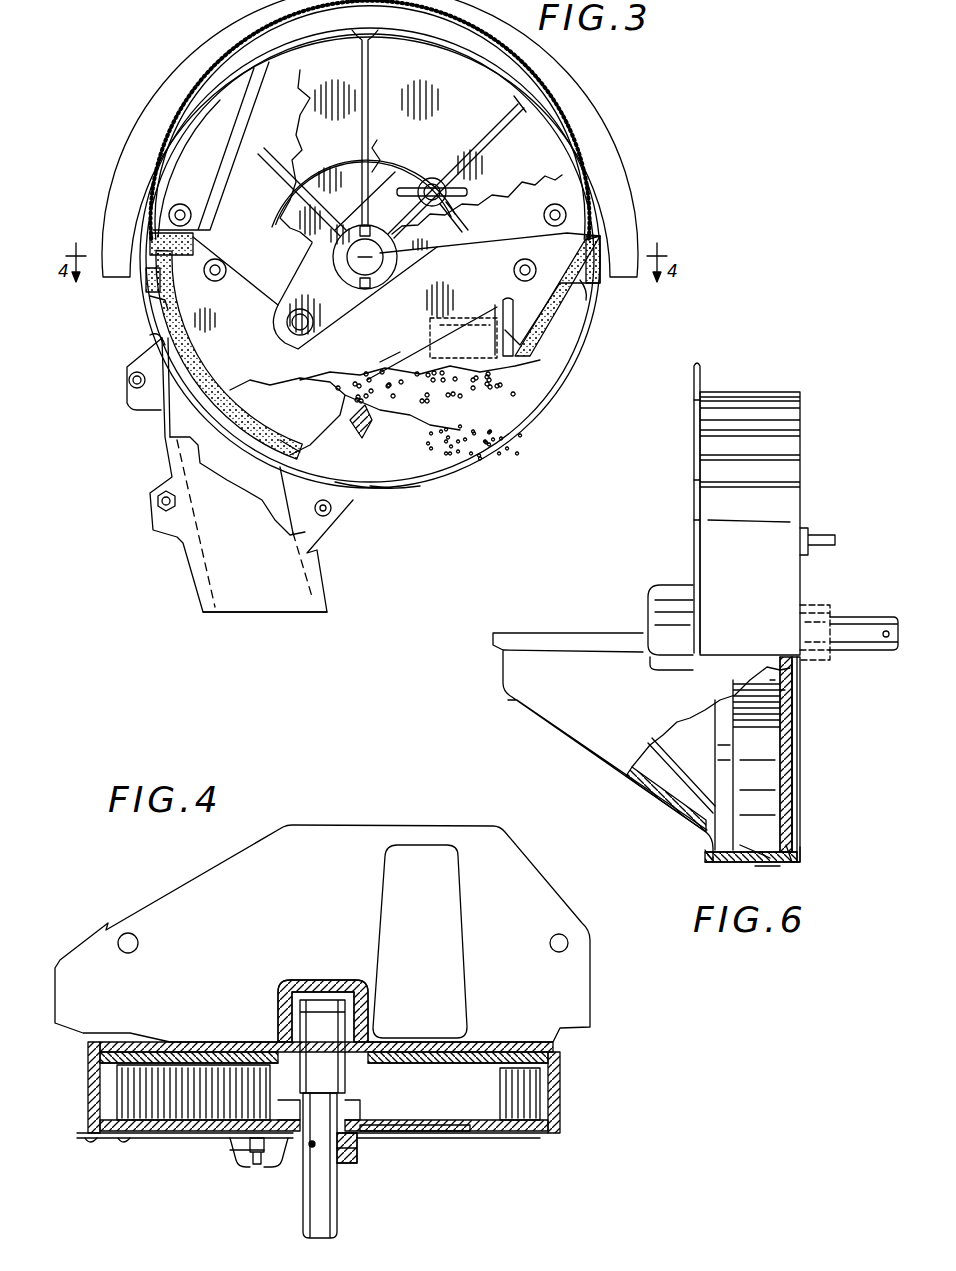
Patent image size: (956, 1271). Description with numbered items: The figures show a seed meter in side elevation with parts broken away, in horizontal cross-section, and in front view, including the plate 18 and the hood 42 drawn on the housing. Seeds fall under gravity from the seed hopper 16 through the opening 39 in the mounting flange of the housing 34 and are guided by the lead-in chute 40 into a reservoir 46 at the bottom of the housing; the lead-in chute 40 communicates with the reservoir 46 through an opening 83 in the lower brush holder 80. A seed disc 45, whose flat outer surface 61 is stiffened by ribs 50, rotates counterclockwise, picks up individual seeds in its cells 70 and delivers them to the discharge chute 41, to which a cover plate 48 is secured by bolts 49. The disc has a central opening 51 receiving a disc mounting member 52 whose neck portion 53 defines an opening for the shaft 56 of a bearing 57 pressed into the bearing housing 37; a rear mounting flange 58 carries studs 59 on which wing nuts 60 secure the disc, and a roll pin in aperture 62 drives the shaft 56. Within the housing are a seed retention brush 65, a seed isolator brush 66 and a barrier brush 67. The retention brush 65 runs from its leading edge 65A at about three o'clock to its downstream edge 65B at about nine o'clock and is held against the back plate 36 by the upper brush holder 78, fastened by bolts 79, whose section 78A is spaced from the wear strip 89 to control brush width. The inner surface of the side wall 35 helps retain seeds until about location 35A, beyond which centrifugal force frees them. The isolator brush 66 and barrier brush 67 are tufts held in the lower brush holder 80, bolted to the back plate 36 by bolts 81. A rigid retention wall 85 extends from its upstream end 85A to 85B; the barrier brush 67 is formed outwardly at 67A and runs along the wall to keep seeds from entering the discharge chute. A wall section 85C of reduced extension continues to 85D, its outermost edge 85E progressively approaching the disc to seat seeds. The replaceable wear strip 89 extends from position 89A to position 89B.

In FIG. 3, the seed hopper 16 is at (366, 84).
In FIG. 4, the top plate 18 is at (320, 866).
In FIG. 3, the housing 34 is at (556, 400).
In FIG. 3, the side wall 35 is at (420, 488).
In FIG. 6, the side wall 35 is at (750, 567).
In FIG. 4, the side wall 35 is at (562, 1074).
In FIG. 3, the end location of side wall interior surface 35A is at (150, 372).
In FIG. 3, the back plate 36 is at (282, 280).
In FIG. 6, the back plate 36 is at (802, 448).
In FIG. 4, the back plate 36 is at (140, 1042).
In FIG. 6, the bearing housing 37 is at (680, 582).
In FIG. 4, the bearing housing 37 is at (340, 982).
In FIG. 4, the opening 39 is at (430, 936).
In FIG. 3, the lead-in chute 40 is at (468, 356).
In FIG. 6, the lead-in chute 40 is at (609, 694).
In FIG. 3, the discharge chute 41 is at (160, 430).
In FIG. 3, the hood 42 is at (584, 94).
In FIG. 6, the hood 42 is at (705, 374).
In FIG. 3, the seed disc 45 is at (484, 112).
In FIG. 6, the seed disc 45 is at (798, 728).
In FIG. 4, the seed disc 45 is at (470, 1133).
In FIG. 3, the reservoir 46 is at (478, 410).
In FIG. 6, the reservoir 46 is at (758, 779).
In FIG. 3, the cover plate 48 is at (250, 600).
In FIG. 3, the bolts 49 is at (156, 498).
In FIG. 3, the ribs 50 is at (376, 152).
In FIG. 6, the ribs 50 is at (795, 686).
In FIG. 4, the ribs 50 is at (416, 1138).
In FIG. 4, the opening 51 is at (360, 1134).
In FIG. 4, the disc mounting member 52 is at (300, 1172).
In FIG. 4, the neck portion 53 is at (352, 1165).
In FIG. 6, the shaft 56 is at (858, 614).
In FIG. 4, the shaft 56 is at (303, 1205).
In FIG. 4, the bearing 57 is at (300, 1030).
In FIG. 4, the rear mounting flange 58 is at (374, 1096).
In FIG. 4, the studs 59 is at (250, 1160).
In FIG. 4, the wing nuts 60 is at (232, 1150).
In FIG. 6, the flat outer surface 61 is at (801, 750).
In FIG. 6, the aperture 62 is at (886, 640).
In FIG. 3, the seed retention brush 65 is at (200, 100).
In FIG. 3, the leading edge of retention brush 65A is at (600, 260).
In FIG. 3, the downstream edge of retention brush 65B is at (150, 286).
In FIG. 3, the seed isolator brush 66 is at (505, 308).
In FIG. 3, the barrier brush 67 is at (190, 322).
In FIG. 3, the radially outward portion of barrier brush 67A is at (200, 243).
In FIG. 6, the seed cell 70 is at (790, 864).
In FIG. 3, the upper brush holder 78 is at (222, 147).
In FIG. 3, the section of upper brush holder 78A is at (566, 175).
In FIG. 3, the bolts 79 is at (176, 204).
In FIG. 3, the lower brush holder 80 is at (476, 280).
In FIG. 3, the bolts 81 is at (218, 259).
In FIG. 3, the opening 83 is at (432, 336).
In FIG. 3, the rigid retention wall 85 is at (205, 343).
In FIG. 4, the rigid retention wall 85 is at (117, 1090).
In FIG. 3, the upstream end of retention wall 85A is at (158, 305).
In FIG. 3, the end of retention wall 85B is at (290, 447).
In FIG. 3, the wall section of reduced extension 85C is at (562, 322).
In FIG. 6, the wall section of reduced extension 85C is at (762, 850).
In FIG. 3, the end of lower wall section 85D is at (583, 284).
In FIG. 3, the outermost edge of inclined wall section 85E is at (382, 490).
In FIG. 6, the outermost edge of inclined wall section 85E is at (772, 866).
In FIG. 3, the wear strip 89 is at (282, 470).
In FIG. 3, the wear strip start position 89A is at (288, 535).
In FIG. 3, the wear strip end position 89B is at (158, 342).